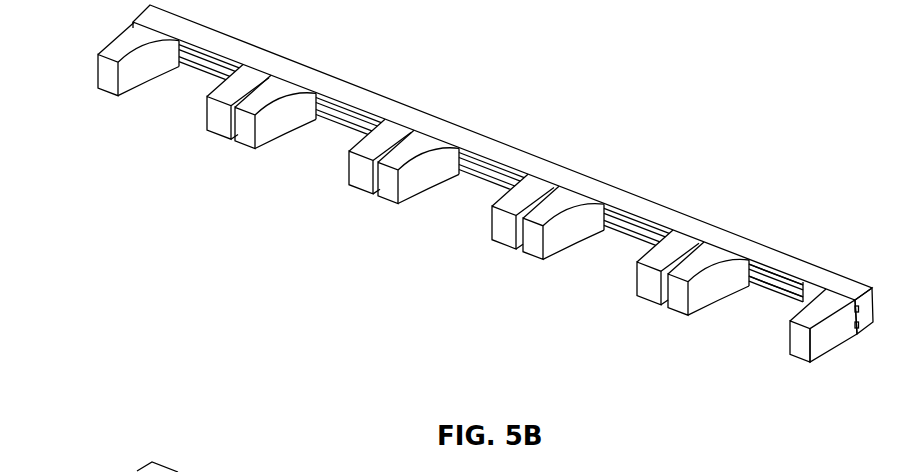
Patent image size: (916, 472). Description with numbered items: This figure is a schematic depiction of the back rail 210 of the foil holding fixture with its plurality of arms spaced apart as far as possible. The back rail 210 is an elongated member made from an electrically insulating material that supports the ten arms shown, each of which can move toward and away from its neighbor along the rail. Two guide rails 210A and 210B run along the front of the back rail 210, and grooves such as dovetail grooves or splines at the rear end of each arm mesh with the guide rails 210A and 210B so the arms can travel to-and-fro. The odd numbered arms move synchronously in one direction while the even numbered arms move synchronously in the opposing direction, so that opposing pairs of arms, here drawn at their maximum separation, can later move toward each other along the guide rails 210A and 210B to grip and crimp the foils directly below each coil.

The back rail 210 is at (852, 290).
The guide rail 210A is at (797, 272).
The guide rail 210B is at (748, 293).